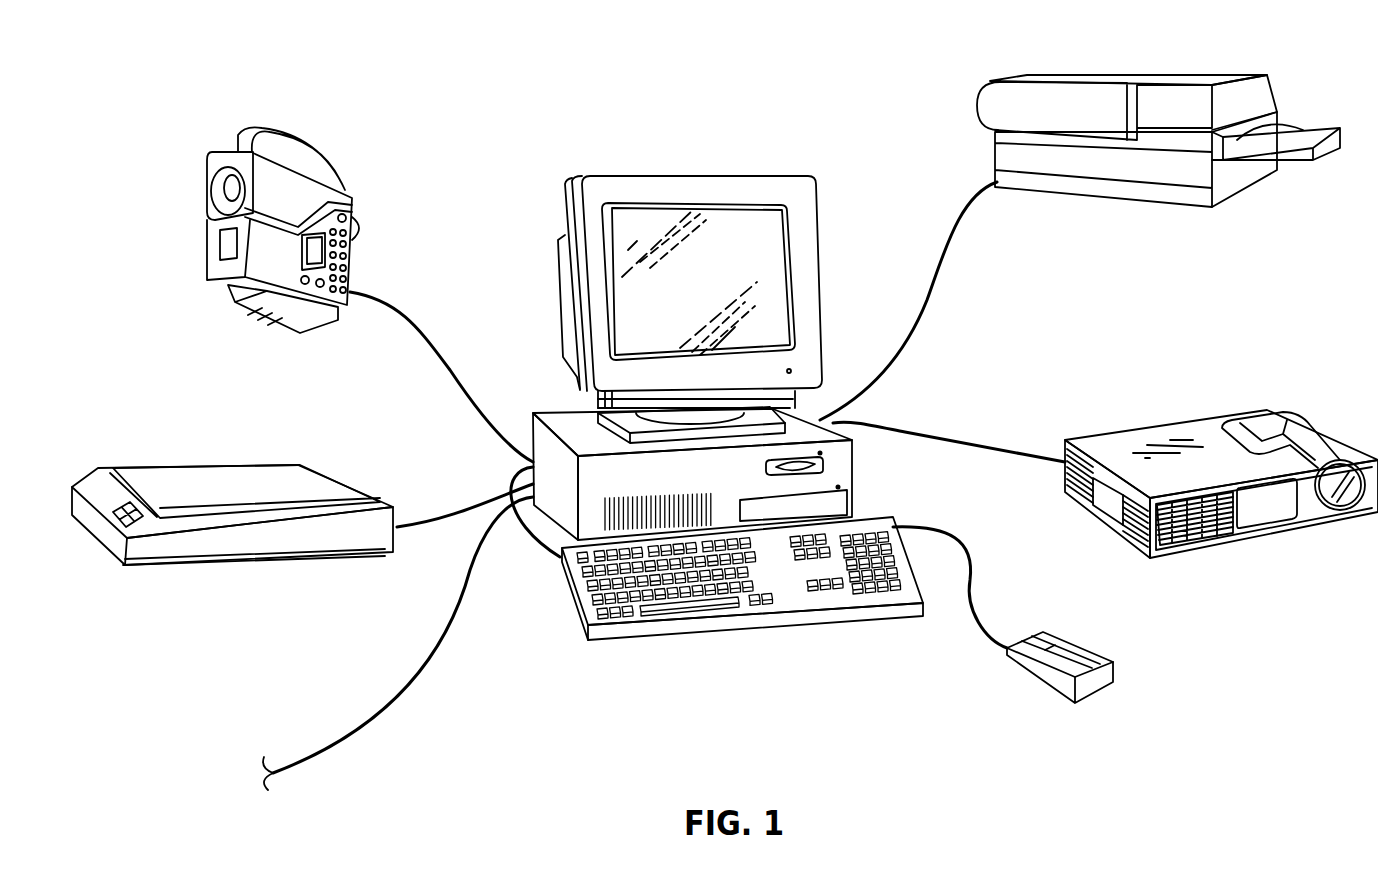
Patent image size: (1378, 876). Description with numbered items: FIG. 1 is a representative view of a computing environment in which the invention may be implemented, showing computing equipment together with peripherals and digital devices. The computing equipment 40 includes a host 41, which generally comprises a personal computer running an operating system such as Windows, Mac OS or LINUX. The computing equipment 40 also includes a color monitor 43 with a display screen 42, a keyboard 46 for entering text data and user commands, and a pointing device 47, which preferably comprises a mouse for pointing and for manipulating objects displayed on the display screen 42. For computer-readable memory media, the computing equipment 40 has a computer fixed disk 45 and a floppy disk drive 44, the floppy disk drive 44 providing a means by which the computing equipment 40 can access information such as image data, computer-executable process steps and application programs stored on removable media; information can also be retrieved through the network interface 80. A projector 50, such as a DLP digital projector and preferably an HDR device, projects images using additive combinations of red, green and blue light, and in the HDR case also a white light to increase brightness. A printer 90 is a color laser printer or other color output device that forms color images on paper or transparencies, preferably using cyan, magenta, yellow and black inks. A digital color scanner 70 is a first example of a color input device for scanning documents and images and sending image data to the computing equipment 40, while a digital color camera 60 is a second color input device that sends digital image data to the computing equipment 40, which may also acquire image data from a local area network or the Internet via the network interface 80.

The computing equipment 40 is at (791, 135).
The host 41 is at (553, 413).
The display screen 42 is at (772, 288).
The color monitor 43 is at (692, 175).
The floppy disk drive 44 is at (820, 465).
The computer fixed disk 45 is at (842, 498).
The keyboard 46 is at (675, 613).
The pointing device 47 is at (1093, 690).
The projector 50 is at (1150, 405).
The digital color camera 60 is at (355, 205).
The digital color scanner 70 is at (287, 561).
The network interface 80 is at (353, 798).
The printer 90 is at (1052, 66).